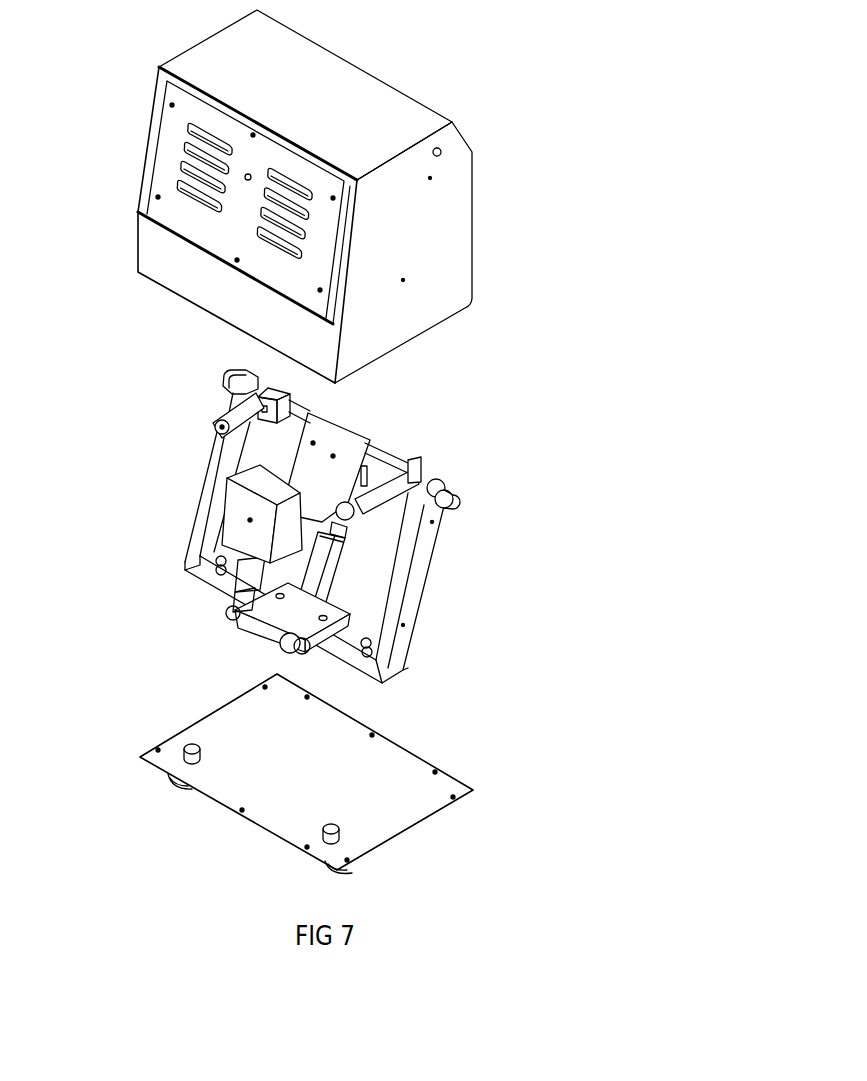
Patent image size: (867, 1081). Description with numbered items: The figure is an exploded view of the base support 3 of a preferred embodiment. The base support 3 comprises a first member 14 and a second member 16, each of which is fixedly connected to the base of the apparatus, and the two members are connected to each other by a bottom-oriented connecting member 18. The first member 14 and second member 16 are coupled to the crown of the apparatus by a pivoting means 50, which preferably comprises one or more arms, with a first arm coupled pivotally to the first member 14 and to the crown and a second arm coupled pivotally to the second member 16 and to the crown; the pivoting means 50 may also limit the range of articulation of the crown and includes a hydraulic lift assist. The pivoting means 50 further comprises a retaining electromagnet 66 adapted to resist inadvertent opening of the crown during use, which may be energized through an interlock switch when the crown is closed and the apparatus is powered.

The base support 3 is at (289, 206).
The first member 14 is at (402, 325).
The second member 16 is at (148, 122).
The connecting member 18 is at (155, 269).
The pivoting means 50 is at (242, 413).
The retaining electromagnet 66 is at (245, 503).